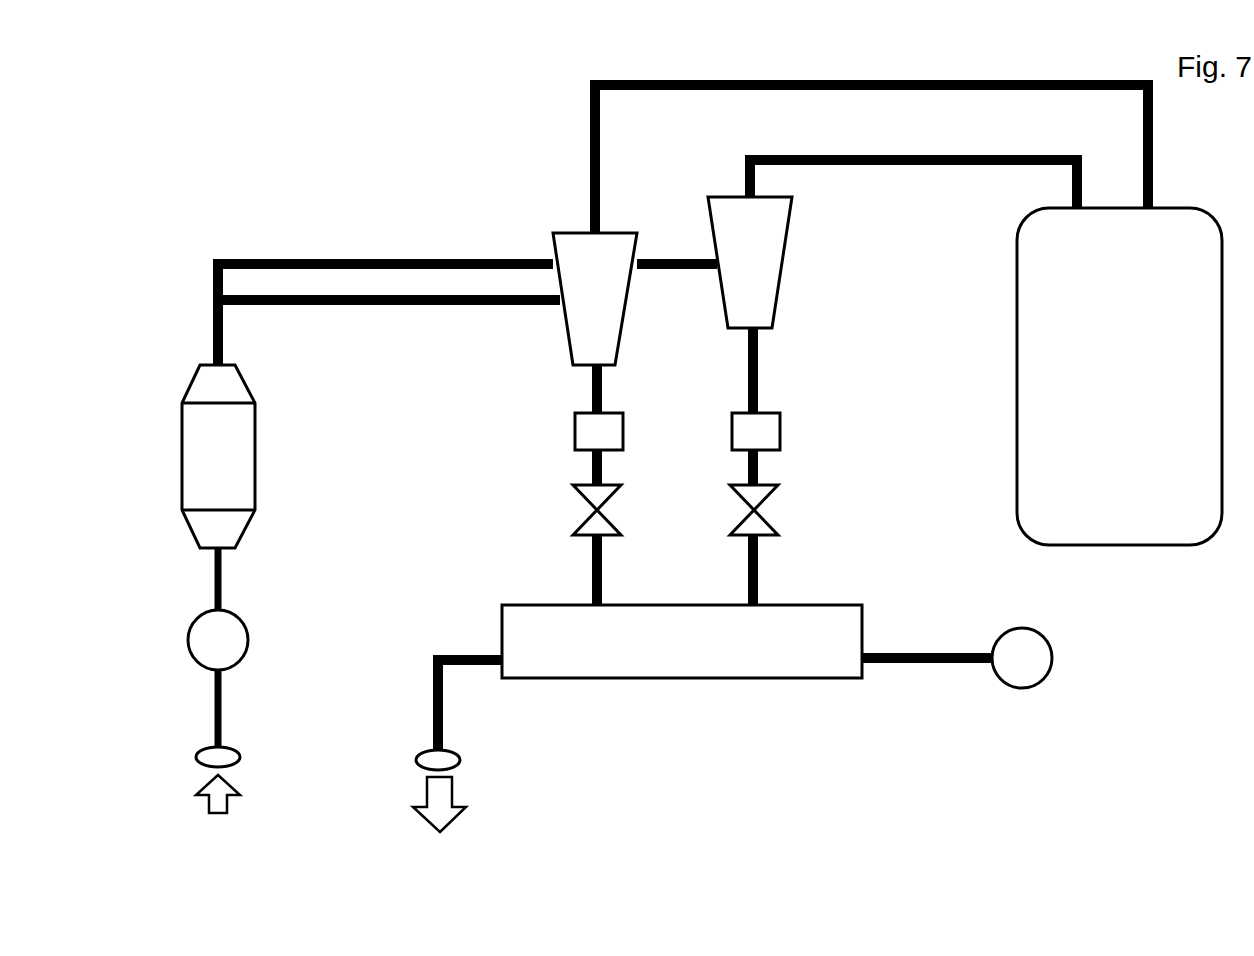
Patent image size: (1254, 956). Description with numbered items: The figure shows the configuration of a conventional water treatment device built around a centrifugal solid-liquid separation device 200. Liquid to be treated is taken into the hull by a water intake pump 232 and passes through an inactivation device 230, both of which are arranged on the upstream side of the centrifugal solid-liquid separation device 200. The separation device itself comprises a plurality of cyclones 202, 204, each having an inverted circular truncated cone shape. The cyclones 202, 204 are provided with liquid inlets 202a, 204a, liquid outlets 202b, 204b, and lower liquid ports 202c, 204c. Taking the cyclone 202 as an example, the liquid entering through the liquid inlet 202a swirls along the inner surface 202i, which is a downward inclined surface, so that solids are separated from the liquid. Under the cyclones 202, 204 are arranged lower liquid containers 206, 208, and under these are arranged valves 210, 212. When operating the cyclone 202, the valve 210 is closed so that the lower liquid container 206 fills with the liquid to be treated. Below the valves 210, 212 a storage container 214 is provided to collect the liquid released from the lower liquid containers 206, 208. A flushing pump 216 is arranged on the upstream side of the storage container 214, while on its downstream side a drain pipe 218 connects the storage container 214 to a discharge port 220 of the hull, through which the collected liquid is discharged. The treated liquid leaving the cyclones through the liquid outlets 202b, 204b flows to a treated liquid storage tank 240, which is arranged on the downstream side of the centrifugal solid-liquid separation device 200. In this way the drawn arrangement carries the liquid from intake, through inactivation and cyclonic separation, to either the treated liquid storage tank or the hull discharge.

The centrifugal solid-liquid separation device 200 is at (448, 175).
The cyclone 202 is at (595, 299).
The liquid inlet 202a is at (553, 303).
The liquid outlet 202b is at (590, 223).
The lower liquid port 202c is at (588, 373).
The inner surface 202i is at (618, 316).
The cyclone 204 is at (750, 262).
The liquid inlet 204a is at (715, 260).
The liquid outlet 204b is at (748, 193).
The lower liquid port 204c is at (758, 332).
The lower liquid container 206 is at (575, 428).
The lower liquid container 208 is at (780, 430).
The valve 210 is at (587, 517).
The valve 212 is at (767, 517).
The storage container 214 is at (682, 641).
The flushing pump 216 is at (1053, 650).
The drain pipe 218 is at (448, 652).
The discharge port 220 is at (460, 760).
The inactivation device 230 is at (168, 450).
The water intake pump 232 is at (187, 632).
The treated liquid storage tank 240 is at (1119, 376).